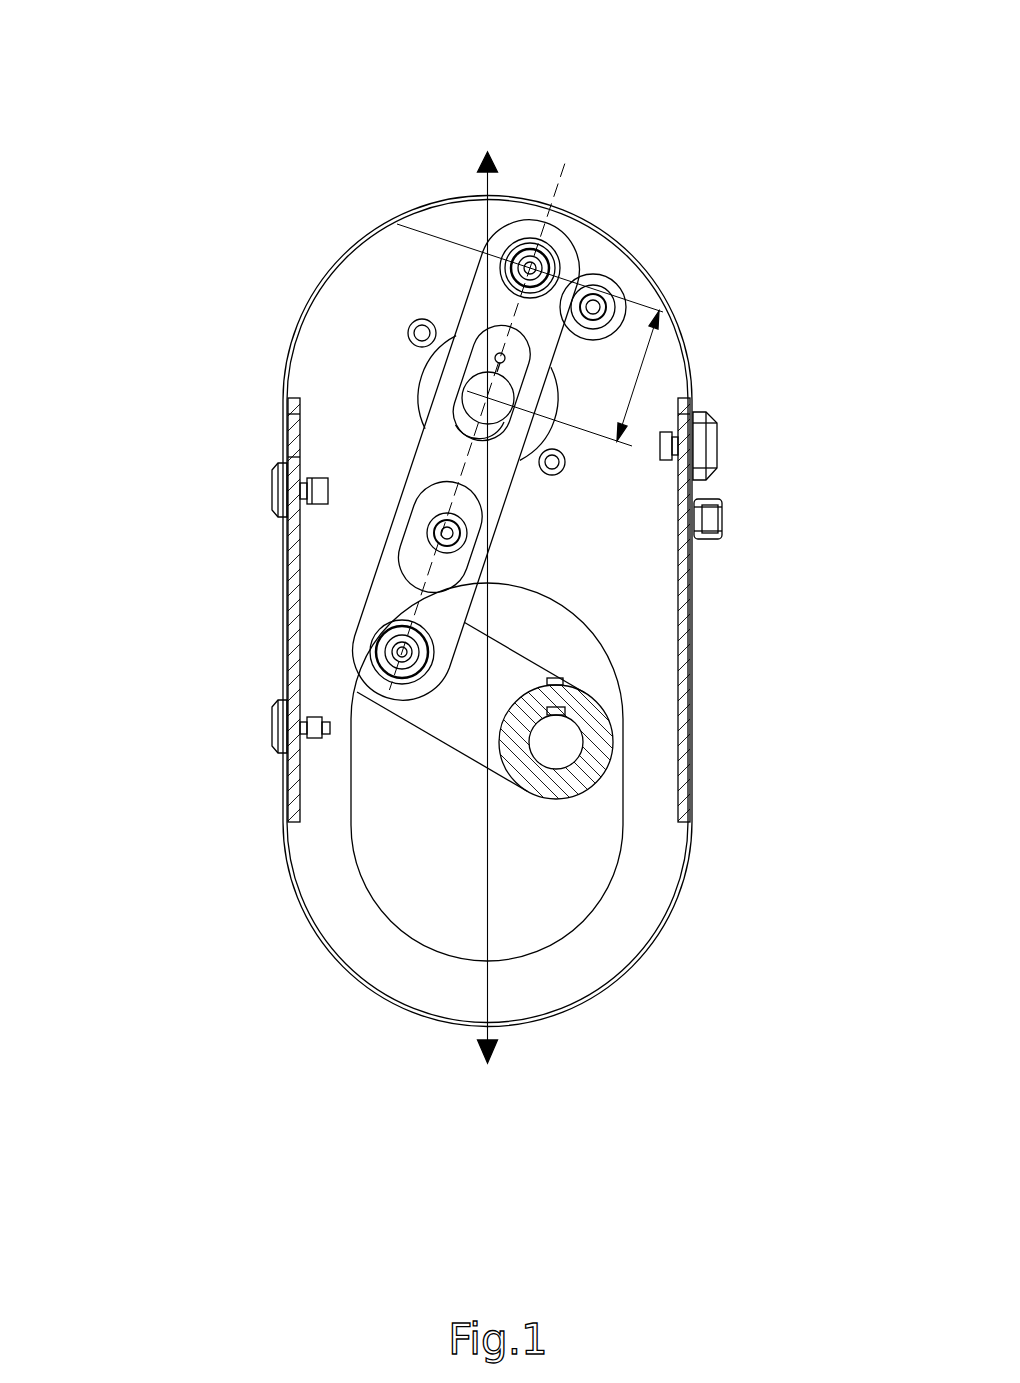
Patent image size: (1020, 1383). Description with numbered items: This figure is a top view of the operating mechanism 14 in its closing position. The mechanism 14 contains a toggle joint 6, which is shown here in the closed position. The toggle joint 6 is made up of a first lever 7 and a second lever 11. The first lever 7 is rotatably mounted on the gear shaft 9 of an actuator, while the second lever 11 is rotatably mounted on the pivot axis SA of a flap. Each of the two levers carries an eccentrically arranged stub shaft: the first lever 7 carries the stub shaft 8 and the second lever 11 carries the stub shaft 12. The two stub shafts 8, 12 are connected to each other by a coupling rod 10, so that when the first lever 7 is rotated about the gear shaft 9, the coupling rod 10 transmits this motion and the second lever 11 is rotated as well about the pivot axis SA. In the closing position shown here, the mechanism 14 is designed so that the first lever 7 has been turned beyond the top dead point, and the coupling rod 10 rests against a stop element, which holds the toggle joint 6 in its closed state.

The toggle joint 6 is at (366, 439).
The first lever 7 is at (542, 390).
The stub shaft 8 is at (526, 258).
The gear shaft 9 is at (478, 390).
The coupling rod 10 is at (395, 533).
The second lever 11 is at (447, 712).
The stub shaft 12 is at (370, 654).
The mechanism 14 is at (662, 172).
The pivot axis SA is at (568, 738).